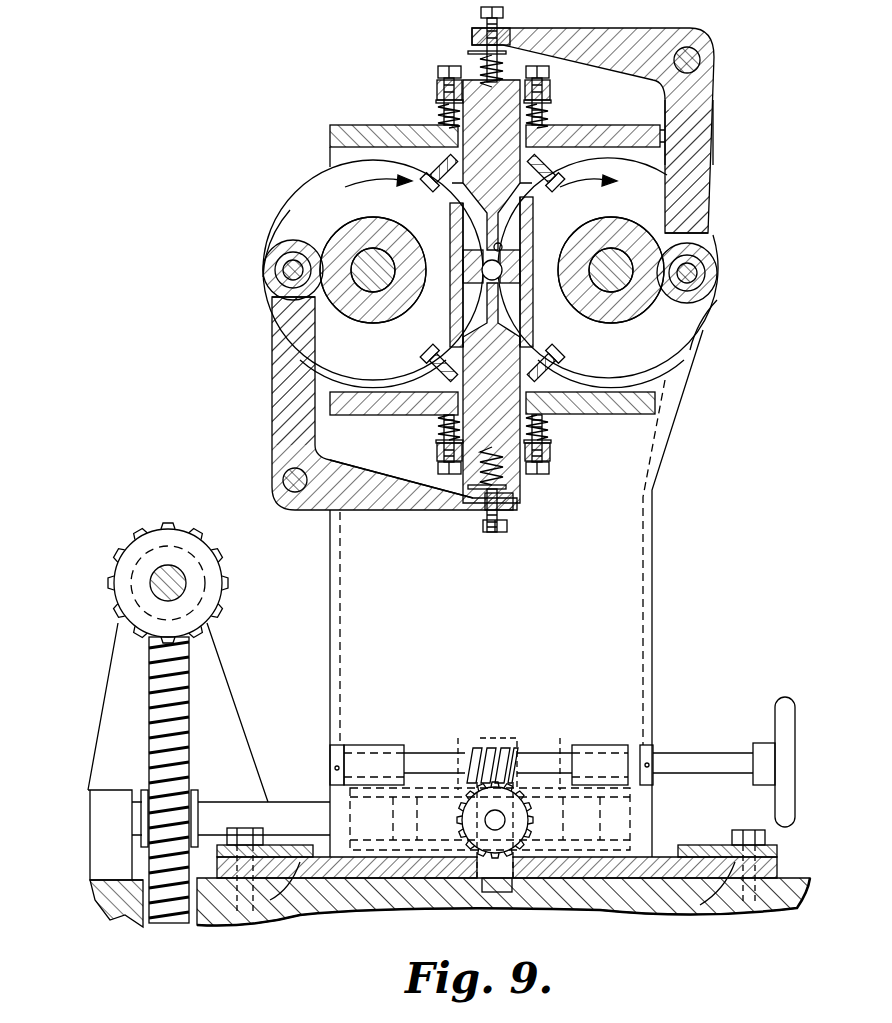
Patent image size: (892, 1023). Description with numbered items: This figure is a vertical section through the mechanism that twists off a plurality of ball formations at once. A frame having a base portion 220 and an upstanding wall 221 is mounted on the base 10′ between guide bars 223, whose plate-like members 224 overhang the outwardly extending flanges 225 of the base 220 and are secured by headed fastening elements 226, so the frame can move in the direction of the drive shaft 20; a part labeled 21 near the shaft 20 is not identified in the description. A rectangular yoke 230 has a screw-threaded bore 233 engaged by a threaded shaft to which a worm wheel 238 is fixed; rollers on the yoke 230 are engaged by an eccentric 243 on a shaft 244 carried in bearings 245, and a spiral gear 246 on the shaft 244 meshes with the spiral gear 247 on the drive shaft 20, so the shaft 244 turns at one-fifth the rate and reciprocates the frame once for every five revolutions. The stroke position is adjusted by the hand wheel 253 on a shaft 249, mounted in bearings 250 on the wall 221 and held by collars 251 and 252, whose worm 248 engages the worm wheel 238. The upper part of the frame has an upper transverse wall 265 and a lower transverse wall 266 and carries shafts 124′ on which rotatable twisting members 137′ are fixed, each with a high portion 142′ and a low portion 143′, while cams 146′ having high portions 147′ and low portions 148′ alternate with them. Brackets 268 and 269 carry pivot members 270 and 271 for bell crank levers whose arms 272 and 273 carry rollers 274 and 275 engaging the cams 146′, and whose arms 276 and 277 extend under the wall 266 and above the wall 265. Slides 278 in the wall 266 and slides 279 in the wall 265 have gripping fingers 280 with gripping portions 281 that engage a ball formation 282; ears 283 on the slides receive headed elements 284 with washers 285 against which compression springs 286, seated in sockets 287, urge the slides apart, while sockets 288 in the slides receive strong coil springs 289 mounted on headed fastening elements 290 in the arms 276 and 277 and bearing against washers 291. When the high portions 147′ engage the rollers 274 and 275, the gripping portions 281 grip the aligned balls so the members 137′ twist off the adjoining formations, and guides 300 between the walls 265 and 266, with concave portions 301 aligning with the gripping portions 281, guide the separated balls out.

The base 10′ is at (778, 898).
The drive shaft 20 is at (180, 585).
The support bracket 21 is at (222, 670).
The shafts 124′ is at (352, 218).
The rotatable members 137′ is at (310, 220).
The high portion 142′ is at (360, 383).
The low portion 143′ is at (268, 250).
The cams 146′ is at (372, 318).
The high portions 147′ is at (372, 216).
The low portions 148′ is at (388, 318).
The base portion 220 is at (665, 857).
The upstanding portion 221 is at (630, 648).
The guide bars 223 is at (780, 862).
The plate-like members 224 is at (215, 843).
The outwardly extending flanges 225 is at (300, 862).
The headed fastening elements 226 is at (248, 835).
The rectangular yoke 230 is at (418, 850).
The screw-threaded bore 233 is at (500, 822).
The worm wheel 238 is at (480, 835).
The eccentric 243 is at (497, 893).
The shaft 244 is at (243, 817).
The bearings 245 is at (458, 745).
The spiral gear 246 is at (172, 712).
The spiral gear 247 is at (150, 545).
The worm 248 is at (510, 745).
The shaft 249 is at (438, 748).
The bearings 250 is at (370, 758).
The collar 251 is at (655, 748).
The collar 252 is at (332, 755).
The hand wheel 253 is at (790, 730).
The upper transverse wall 265 is at (330, 140).
The lower transverse wall 266 is at (376, 392).
The bracket 268 is at (350, 443).
The bracket 269 is at (650, 103).
The pivot member 270 is at (283, 478).
The pivot member 271 is at (700, 55).
The arm 272 is at (275, 358).
The arm 273 is at (690, 165).
The roller 274 is at (283, 283).
The roller 275 is at (712, 248).
The arm 276 is at (393, 510).
The arm 277 is at (598, 32).
The slides 278 is at (580, 415).
The slides 279 is at (560, 157).
The gripping fingers 280 is at (537, 215).
The gripping portions 281 is at (525, 233).
The ball formation 282 is at (462, 232).
The ears 283 is at (437, 86).
The screw-threaded headed elements 284 is at (440, 72).
The washers 285 is at (437, 102).
The compression springs 286 is at (446, 118).
The sockets 287 is at (427, 143).
The sockets 288 is at (478, 65).
The coil springs 289 is at (470, 52).
The screw-threaded headed fastening elements 290 is at (504, 12).
The washers 291 is at (479, 22).
The guides 300 is at (456, 330).
The concave ball guiding portions 301 is at (462, 255).